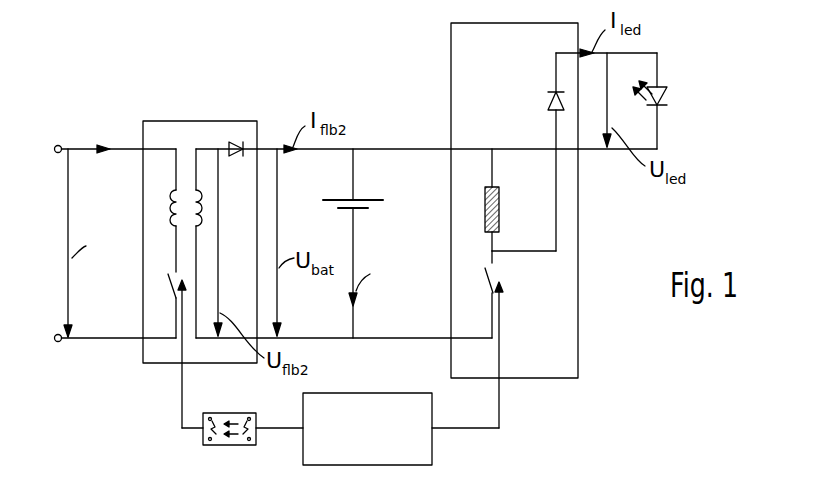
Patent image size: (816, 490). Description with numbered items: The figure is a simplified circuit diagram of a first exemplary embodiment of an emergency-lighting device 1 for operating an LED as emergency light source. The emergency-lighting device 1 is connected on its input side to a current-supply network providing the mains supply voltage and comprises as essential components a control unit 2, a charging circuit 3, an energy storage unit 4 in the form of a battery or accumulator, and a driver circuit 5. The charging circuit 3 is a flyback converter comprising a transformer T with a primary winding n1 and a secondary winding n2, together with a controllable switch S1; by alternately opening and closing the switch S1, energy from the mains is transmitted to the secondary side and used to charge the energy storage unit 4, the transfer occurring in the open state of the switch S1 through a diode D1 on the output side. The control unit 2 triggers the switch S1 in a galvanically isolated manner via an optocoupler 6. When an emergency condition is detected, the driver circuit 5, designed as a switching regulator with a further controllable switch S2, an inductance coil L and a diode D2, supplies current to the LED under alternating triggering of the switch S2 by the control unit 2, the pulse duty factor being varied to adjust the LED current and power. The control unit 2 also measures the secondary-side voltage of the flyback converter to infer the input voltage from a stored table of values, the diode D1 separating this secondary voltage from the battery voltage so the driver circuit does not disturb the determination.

The emergency-lighting device 1 is at (112, 406).
The control unit 2 is at (373, 393).
The charging circuit 3 is at (188, 121).
The energy storage unit 4 is at (360, 199).
The driver circuit 5 is at (451, 75).
The optocoupler 6 is at (225, 446).
The transformer T is at (158, 243).
The primary winding n1 is at (162, 193).
The secondary winding n2 is at (208, 243).
The controllable switch S1 is at (174, 327).
The further controllable switch S2 is at (486, 294).
The diode D1 is at (238, 141).
The diode D2 is at (547, 100).
The inductance coil L is at (500, 210).
The element LED is at (664, 95).